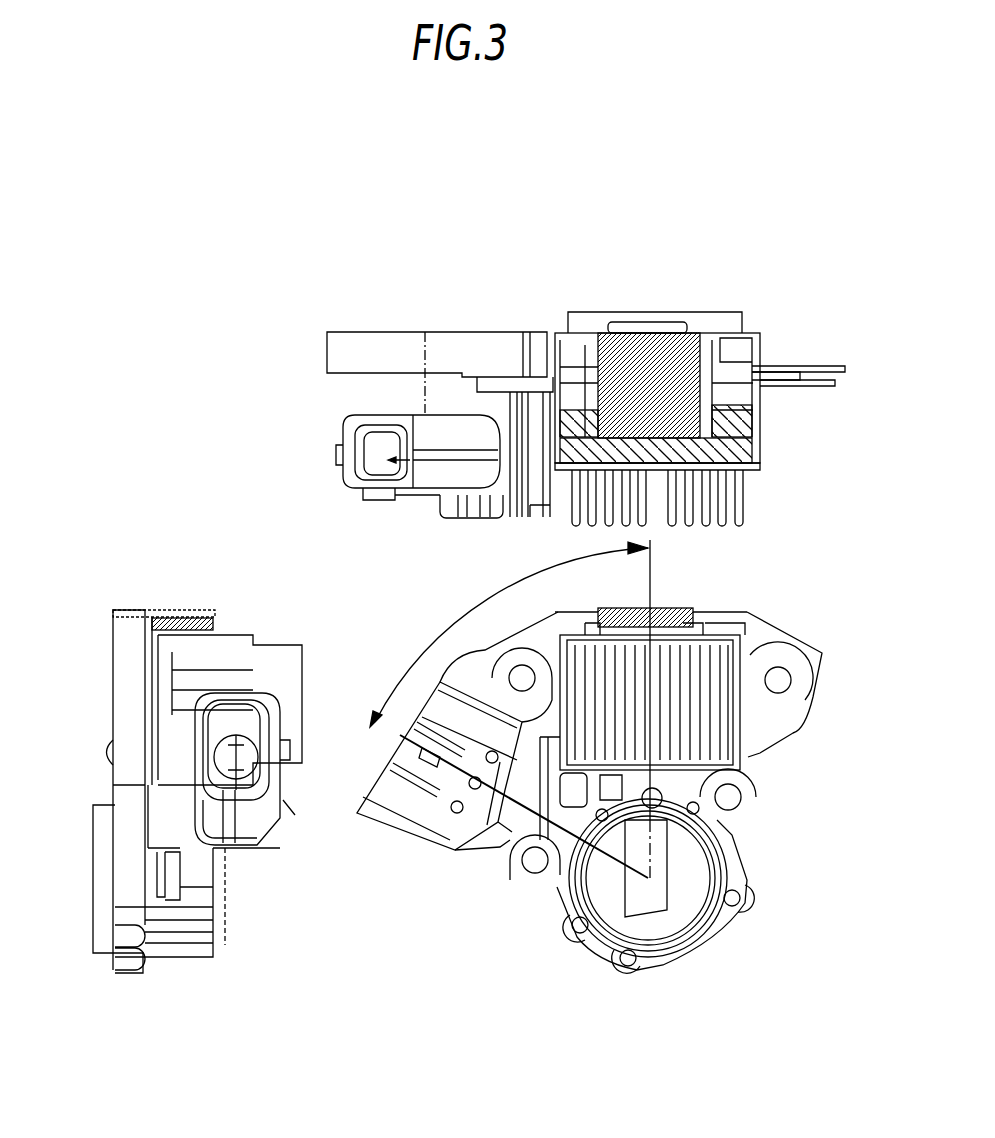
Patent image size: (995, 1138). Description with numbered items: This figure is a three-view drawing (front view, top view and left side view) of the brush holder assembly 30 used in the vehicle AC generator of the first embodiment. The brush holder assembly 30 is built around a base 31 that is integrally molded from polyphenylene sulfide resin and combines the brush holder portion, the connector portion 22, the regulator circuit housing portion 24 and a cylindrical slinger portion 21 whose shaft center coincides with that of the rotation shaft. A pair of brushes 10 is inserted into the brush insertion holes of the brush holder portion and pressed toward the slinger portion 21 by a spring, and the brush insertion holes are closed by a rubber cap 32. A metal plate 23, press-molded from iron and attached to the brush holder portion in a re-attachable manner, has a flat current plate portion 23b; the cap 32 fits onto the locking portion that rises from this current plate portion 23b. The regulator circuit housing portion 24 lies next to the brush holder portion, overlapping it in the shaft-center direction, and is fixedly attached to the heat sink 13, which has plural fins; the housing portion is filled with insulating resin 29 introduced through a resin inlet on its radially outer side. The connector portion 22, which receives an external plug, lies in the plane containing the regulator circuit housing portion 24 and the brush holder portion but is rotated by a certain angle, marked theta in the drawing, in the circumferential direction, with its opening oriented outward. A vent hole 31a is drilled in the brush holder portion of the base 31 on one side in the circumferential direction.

The brush 10 is at (660, 878).
The heat sink 13 is at (745, 470).
The slinger portion 21 is at (718, 318).
The connector portion 22 is at (343, 480).
The plate 23 is at (352, 357).
The current plate portion 23b is at (500, 331).
The regulator circuit housing portion 24 is at (760, 427).
The insulating resin 29 is at (738, 418).
The brush holder assembly 30 is at (529, 1015).
The base 31 is at (762, 440).
The vent hole 31a is at (500, 822).
The cap 32 is at (680, 366).